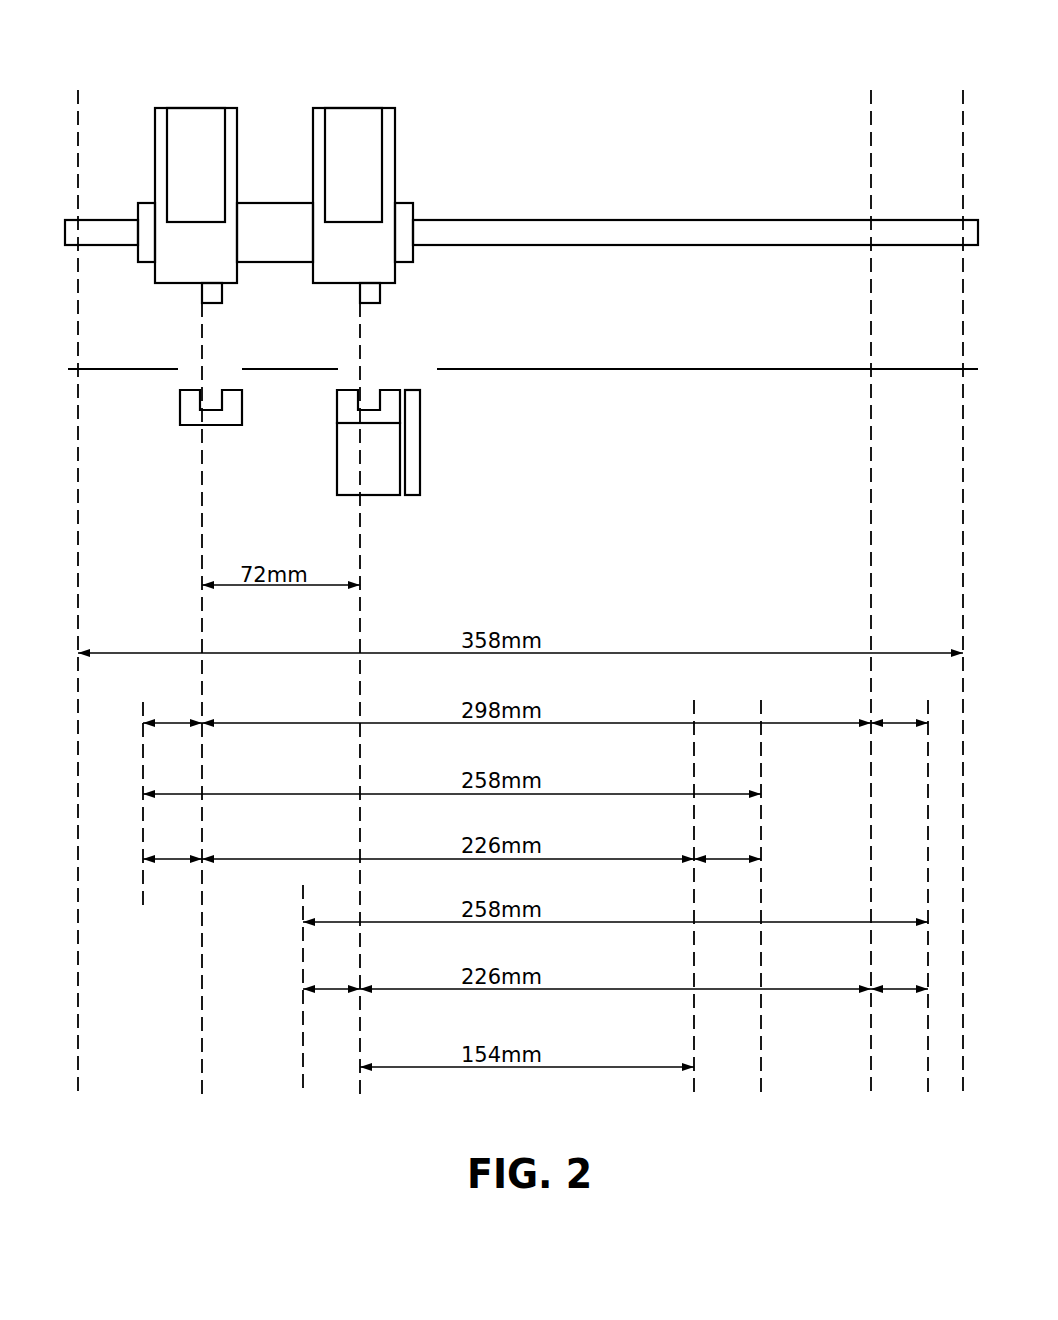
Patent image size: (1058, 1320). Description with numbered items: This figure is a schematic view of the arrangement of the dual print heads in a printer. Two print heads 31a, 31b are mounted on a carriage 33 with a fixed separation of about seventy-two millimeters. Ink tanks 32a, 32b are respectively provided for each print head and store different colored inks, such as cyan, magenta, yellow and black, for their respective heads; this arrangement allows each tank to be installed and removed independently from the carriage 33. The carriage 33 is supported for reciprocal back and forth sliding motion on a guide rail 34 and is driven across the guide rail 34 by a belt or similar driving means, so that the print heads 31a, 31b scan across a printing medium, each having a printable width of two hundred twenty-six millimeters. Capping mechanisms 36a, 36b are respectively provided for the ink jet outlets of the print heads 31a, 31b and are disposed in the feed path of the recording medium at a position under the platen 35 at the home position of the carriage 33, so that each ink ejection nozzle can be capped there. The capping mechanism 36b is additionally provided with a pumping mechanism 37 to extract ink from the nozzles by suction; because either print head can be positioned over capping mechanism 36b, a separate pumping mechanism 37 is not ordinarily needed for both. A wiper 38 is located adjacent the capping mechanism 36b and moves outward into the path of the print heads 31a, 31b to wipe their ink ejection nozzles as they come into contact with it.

The print head 31a is at (177, 108).
The ink tank 32a is at (237, 108).
The print head 31b is at (337, 108).
The ink tank 32b is at (395, 108).
The carriage 33 is at (283, 203).
The guide rail 34 is at (690, 220).
The platen 35 is at (688, 369).
The capping mechanism 36a is at (180, 418).
The capping mechanism 36b is at (337, 420).
The pumping mechanism 37 is at (337, 447).
The wiper 38 is at (420, 423).